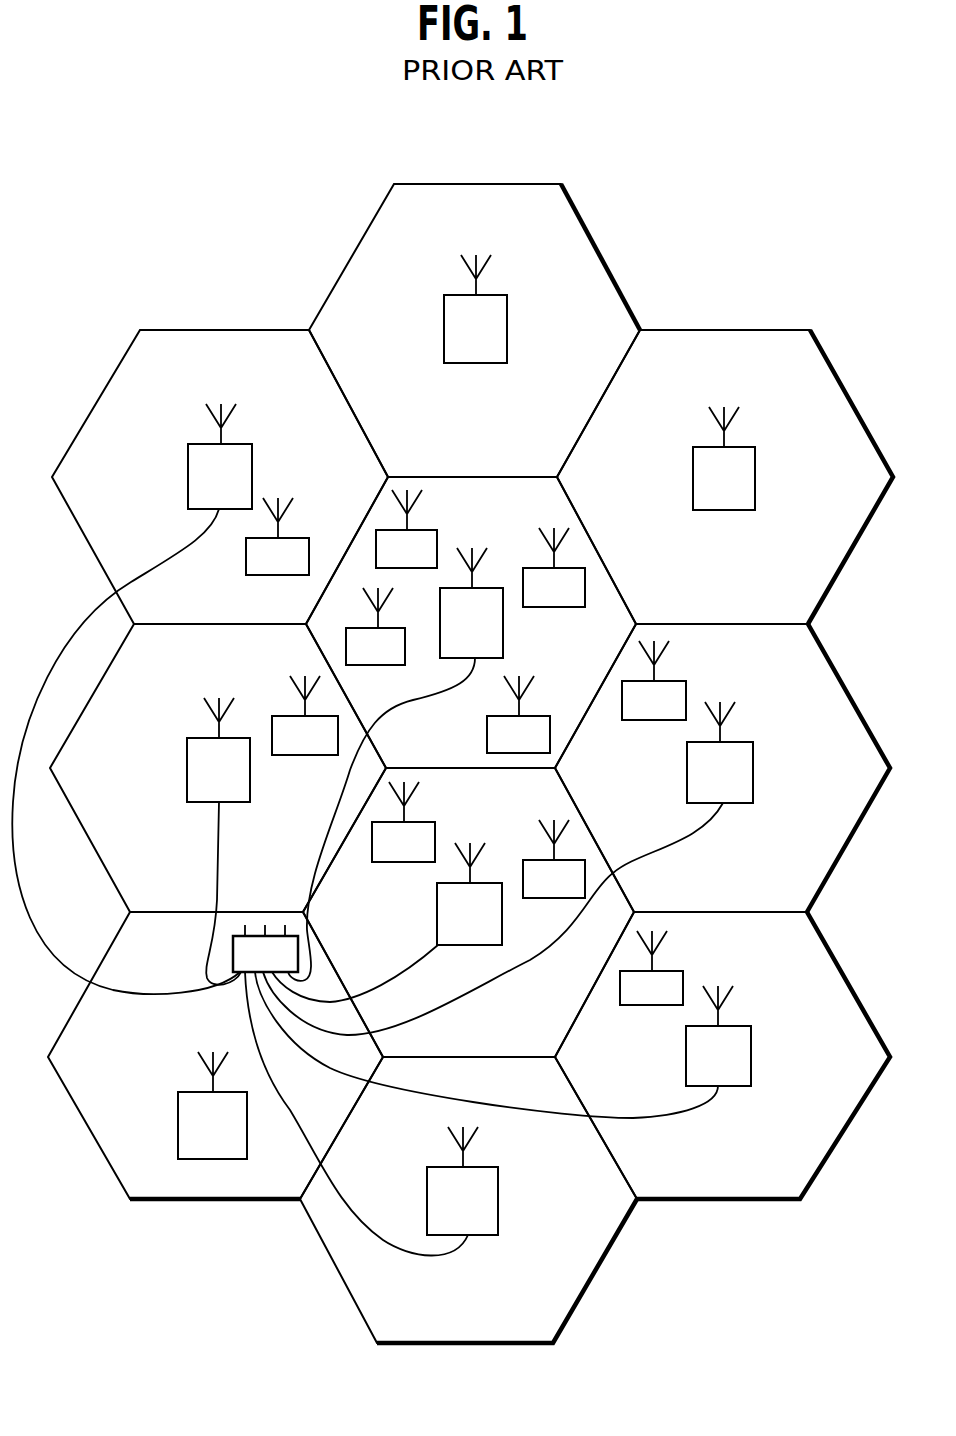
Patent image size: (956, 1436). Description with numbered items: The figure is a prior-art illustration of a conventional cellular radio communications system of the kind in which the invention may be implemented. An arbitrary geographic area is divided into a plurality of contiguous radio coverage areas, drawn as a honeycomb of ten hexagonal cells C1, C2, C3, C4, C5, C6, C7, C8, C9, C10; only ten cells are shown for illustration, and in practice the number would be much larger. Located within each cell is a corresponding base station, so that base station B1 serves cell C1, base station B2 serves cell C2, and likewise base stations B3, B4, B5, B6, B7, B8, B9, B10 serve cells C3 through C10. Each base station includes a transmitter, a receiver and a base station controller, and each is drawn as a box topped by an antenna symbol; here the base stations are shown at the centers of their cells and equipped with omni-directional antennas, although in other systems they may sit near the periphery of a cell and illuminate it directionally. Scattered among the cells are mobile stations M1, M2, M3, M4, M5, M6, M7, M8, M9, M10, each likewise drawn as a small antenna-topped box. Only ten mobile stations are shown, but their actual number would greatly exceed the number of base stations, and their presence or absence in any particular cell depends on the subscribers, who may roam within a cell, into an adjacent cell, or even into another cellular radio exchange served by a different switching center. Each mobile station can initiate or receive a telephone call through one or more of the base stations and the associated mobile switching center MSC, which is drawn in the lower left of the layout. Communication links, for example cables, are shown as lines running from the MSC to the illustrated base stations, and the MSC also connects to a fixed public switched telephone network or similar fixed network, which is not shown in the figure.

The cell C1 is at (412, 757).
The cell C2 is at (677, 612).
The cell C3 is at (680, 891).
The cell C4 is at (422, 1048).
The cell C5 is at (172, 890).
The cell C6 is at (175, 609).
The cell C7 is at (433, 466).
The cell C8 is at (678, 1190).
The cell C9 is at (412, 1328).
The cell C10 is at (165, 1190).
The base station B1 is at (395, 764).
The base station B2 is at (724, 458).
The base station B3 is at (508, 868).
The base station B4 is at (387, 922).
The base station B5 is at (218, 841).
The base station B6 is at (132, 699).
The base station B7 is at (475, 309).
The base station B8 is at (503, 1045).
The base station B9 is at (371, 1114).
The base station B10 is at (212, 1105).
The mobile station M1 is at (651, 968).
The mobile station M2 is at (305, 715).
The mobile station M3 is at (375, 626).
The mobile station M4 is at (554, 567).
The mobile station M5 is at (654, 680).
The mobile station M6 is at (406, 529).
The mobile station M7 is at (518, 714).
The mobile station M8 is at (554, 859).
The mobile station M9 is at (403, 822).
The mobile station M10 is at (277, 536).
The mobile switching center MSC is at (265, 948).